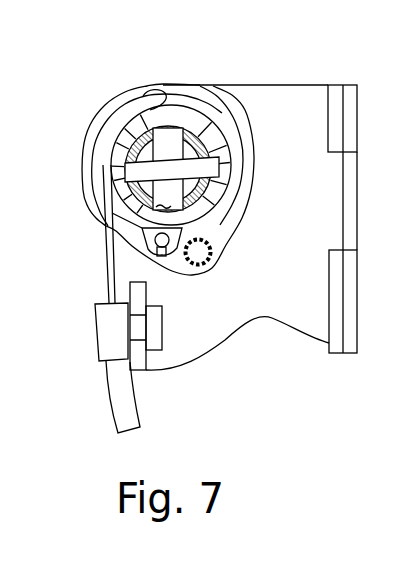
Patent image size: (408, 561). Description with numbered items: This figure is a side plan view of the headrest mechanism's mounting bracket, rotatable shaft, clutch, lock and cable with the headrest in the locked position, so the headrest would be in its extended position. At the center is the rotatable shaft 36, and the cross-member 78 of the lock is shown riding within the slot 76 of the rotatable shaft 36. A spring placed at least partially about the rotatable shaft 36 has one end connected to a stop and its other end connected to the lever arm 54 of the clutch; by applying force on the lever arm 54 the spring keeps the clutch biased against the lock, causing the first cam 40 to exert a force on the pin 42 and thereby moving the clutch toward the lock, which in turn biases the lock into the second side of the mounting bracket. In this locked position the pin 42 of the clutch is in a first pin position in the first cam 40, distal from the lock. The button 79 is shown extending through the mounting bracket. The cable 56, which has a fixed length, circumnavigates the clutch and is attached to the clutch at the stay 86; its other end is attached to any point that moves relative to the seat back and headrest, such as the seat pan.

The rotatable shaft 36 is at (130, 148).
The first cam 40 is at (136, 117).
The pin 42 is at (93, 136).
The lever arm 54 is at (160, 90).
The cable 56 is at (108, 287).
The slot 76 is at (157, 213).
The cross-member 78 is at (173, 150).
The button 79 is at (202, 253).
The stay 86 is at (165, 255).